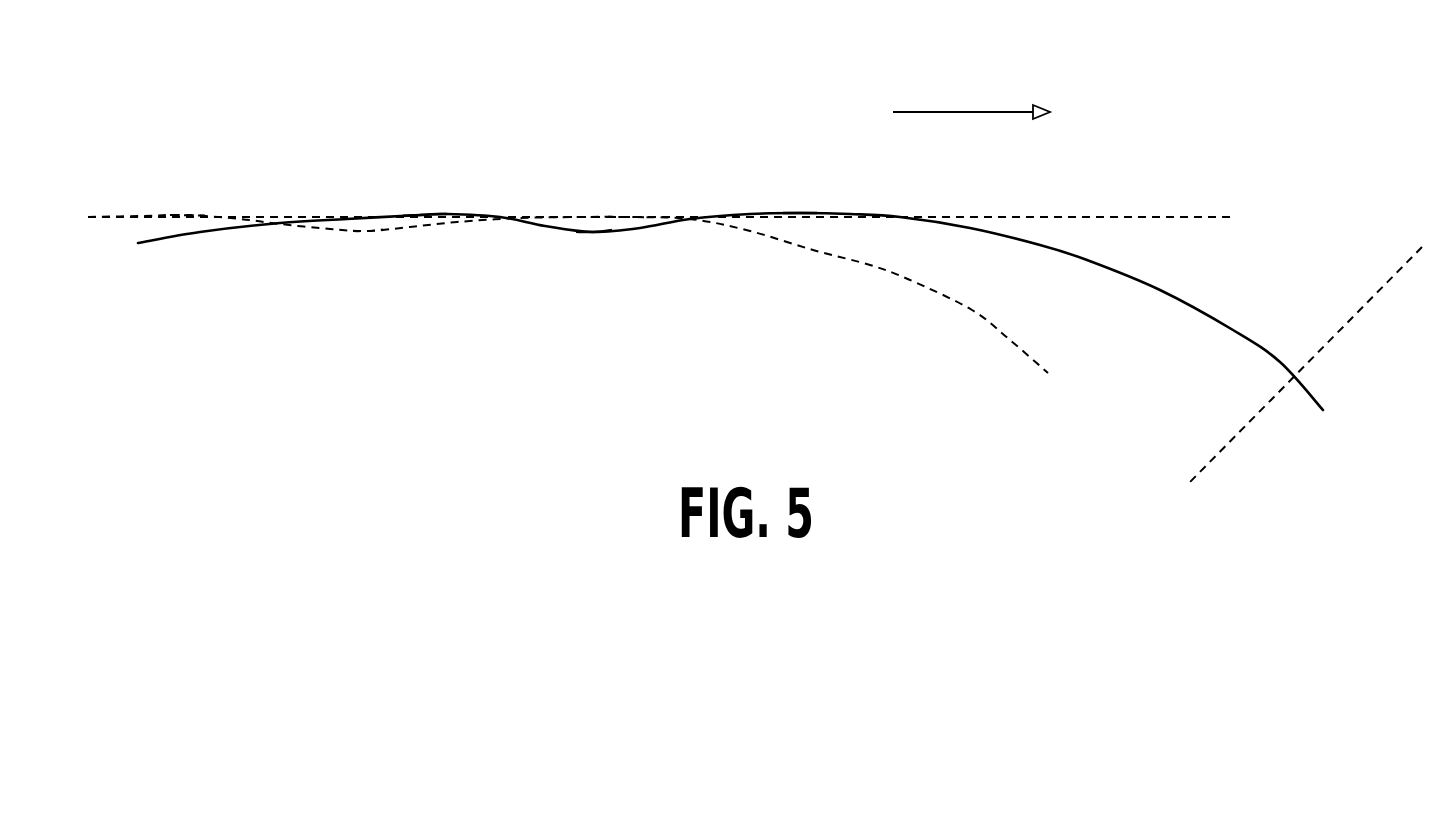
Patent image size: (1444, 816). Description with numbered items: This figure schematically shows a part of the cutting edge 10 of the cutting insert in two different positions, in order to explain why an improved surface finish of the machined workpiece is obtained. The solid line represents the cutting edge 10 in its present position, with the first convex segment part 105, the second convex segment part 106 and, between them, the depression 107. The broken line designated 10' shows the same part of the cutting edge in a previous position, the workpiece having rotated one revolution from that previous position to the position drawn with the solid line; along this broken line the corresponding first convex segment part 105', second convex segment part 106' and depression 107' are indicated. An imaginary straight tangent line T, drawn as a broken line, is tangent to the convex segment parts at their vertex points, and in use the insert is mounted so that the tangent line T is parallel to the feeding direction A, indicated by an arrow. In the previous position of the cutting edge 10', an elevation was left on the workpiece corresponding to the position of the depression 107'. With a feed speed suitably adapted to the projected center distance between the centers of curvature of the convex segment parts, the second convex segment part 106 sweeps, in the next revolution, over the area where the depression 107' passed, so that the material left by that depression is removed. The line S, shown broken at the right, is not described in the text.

The cutting edge 10 is at (730, 311).
The cutting edge in a previous position 10' is at (568, 308).
The first convex segment part 105 is at (813, 149).
The first convex segment part in the previous position 105' is at (634, 139).
The second convex segment part 106 is at (433, 131).
The second convex segment part in the previous position 106' is at (203, 144).
The depression 107 is at (584, 312).
The depression in the previous position 107' is at (345, 311).
The feeding direction A is at (950, 112).
The tangent line T is at (1138, 217).
The surface line S is at (1373, 297).